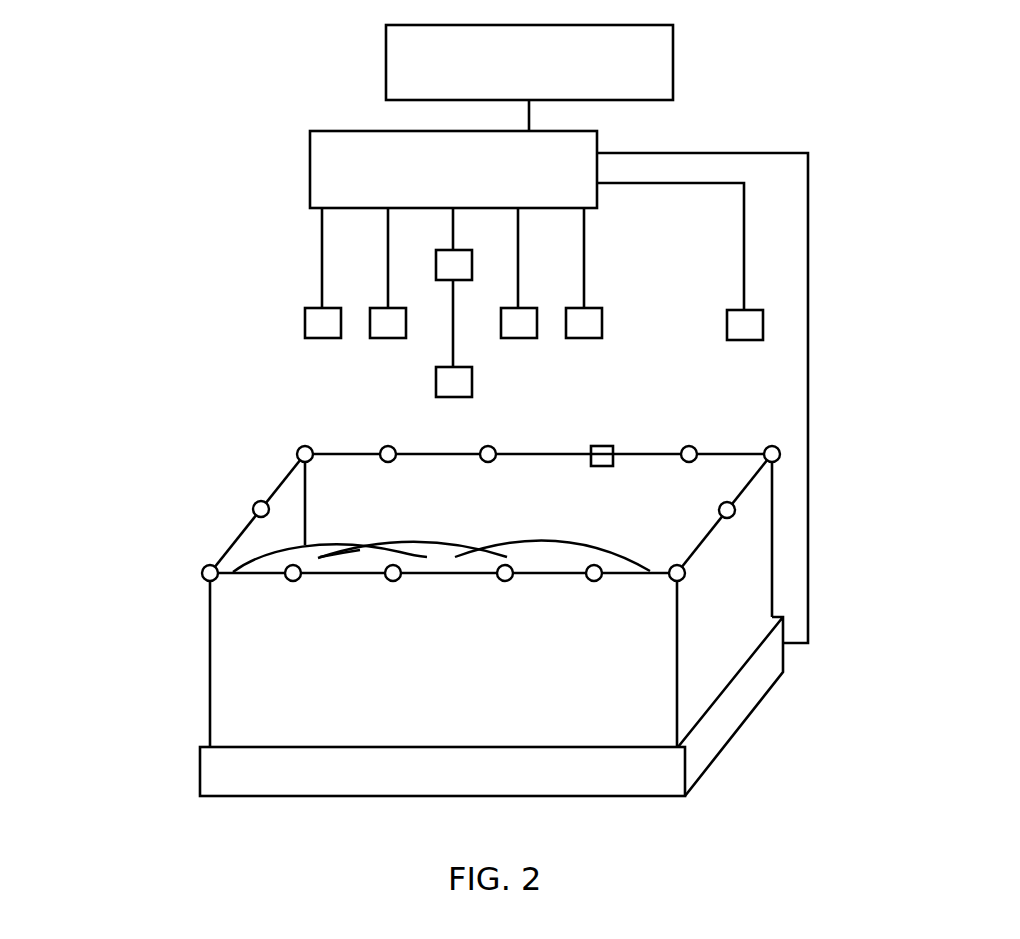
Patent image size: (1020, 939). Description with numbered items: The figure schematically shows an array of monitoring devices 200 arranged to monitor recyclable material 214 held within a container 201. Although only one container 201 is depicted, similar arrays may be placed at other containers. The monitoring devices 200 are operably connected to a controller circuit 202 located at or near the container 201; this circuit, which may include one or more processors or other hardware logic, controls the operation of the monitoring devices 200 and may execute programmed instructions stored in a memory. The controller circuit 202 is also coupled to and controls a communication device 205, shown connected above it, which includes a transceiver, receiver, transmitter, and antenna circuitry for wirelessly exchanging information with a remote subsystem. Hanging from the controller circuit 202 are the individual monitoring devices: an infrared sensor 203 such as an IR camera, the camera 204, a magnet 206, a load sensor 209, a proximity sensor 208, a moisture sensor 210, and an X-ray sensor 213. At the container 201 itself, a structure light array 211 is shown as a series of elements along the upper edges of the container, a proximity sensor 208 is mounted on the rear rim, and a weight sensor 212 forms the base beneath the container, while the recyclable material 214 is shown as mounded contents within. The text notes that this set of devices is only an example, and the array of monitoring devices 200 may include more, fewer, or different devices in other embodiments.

The monitoring devices 200 is at (103, 204).
The container 201 is at (209, 648).
The controller circuit 202 is at (310, 153).
The infrared sensor 203 is at (305, 326).
The camera 204 is at (370, 326).
The communication device 205 is at (386, 42).
The magnet 206 is at (436, 386).
The proximity sensor 208 is at (501, 326).
The load sensor 209 is at (436, 268).
The moisture sensor 210 is at (566, 326).
The structure light array 211 is at (254, 507).
The weight sensor 212 is at (200, 772).
The X-ray sensor 213 is at (727, 326).
The recyclable material 214 is at (455, 544).